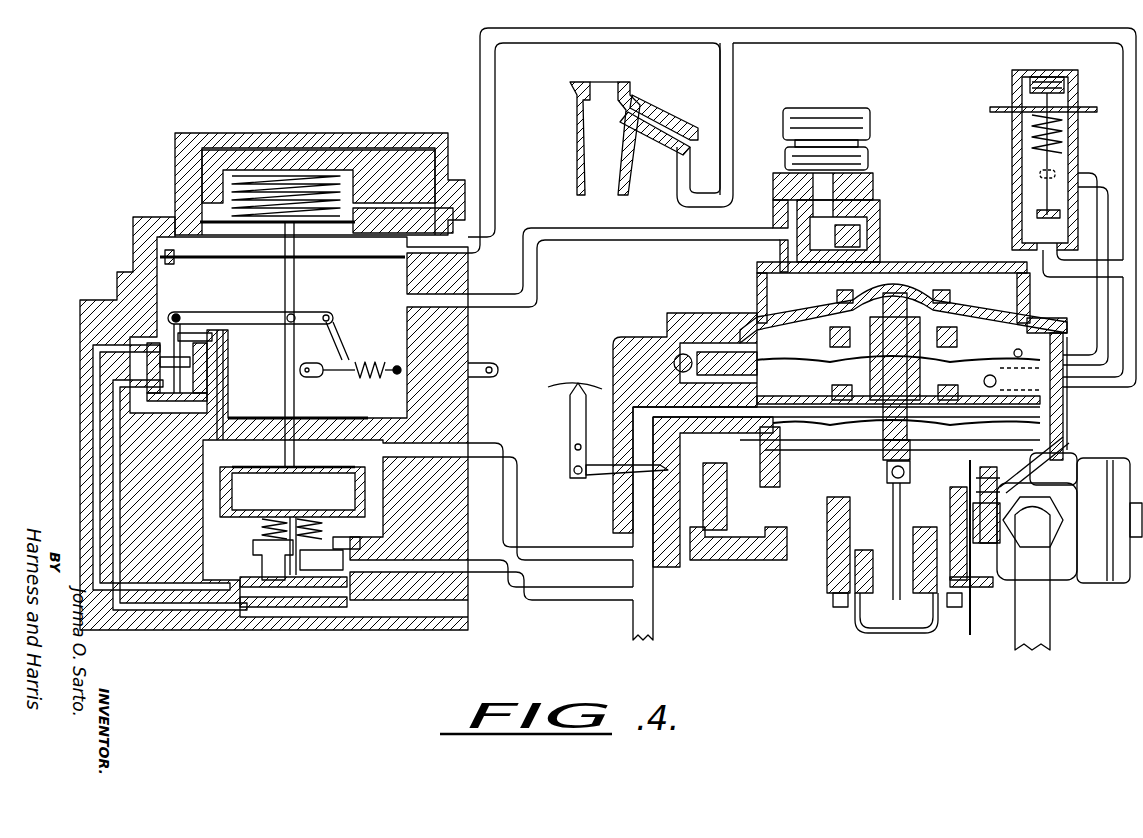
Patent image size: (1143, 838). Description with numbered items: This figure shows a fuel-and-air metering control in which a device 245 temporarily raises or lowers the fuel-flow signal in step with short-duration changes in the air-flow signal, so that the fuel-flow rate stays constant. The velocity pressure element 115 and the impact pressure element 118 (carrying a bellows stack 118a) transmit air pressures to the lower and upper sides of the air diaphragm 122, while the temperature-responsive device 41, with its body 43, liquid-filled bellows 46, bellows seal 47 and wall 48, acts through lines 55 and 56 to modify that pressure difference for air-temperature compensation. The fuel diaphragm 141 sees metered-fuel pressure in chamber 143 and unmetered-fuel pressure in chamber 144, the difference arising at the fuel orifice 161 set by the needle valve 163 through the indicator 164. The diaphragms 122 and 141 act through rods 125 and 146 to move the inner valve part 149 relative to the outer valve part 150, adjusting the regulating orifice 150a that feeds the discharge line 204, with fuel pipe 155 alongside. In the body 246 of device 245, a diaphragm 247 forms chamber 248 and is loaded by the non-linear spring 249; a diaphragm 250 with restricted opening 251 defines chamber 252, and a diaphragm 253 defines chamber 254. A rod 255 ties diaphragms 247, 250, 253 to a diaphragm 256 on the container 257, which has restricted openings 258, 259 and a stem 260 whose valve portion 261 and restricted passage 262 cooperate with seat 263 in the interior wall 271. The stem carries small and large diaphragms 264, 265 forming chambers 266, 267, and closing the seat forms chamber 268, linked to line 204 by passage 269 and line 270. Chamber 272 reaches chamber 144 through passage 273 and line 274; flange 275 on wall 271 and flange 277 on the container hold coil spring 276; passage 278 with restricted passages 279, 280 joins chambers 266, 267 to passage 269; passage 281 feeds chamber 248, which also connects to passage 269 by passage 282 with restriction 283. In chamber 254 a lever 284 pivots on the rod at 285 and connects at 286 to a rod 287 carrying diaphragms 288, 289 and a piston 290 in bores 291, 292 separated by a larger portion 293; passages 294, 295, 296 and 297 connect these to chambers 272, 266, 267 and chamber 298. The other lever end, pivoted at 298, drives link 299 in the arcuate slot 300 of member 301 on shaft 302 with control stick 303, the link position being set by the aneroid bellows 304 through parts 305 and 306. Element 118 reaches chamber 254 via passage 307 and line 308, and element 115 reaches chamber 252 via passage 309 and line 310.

The device 245 is at (245, 126).
The body 246 is at (318, 131).
The diaphragm 247 is at (309, 220).
The chamber 248 is at (262, 207).
The variable-rate spring 249 is at (276, 179).
The diaphragm 250 is at (323, 262).
The restricted opening 251 is at (170, 264).
The chamber 252 is at (310, 246).
The diaphragm 253 is at (300, 419).
The chamber 254 is at (350, 325).
The rod 255 is at (270, 373).
The diaphragm 256 is at (268, 467).
The container 257 is at (352, 467).
The restricted opening 258 is at (292, 492).
The restricted opening 259 is at (240, 494).
The stem part 260 is at (342, 576).
The valve portion 261 is at (252, 550).
The restricted passage 262 is at (254, 566).
The seat 263 is at (333, 547).
The small diaphragm 264 is at (316, 590).
The large diaphragm 265 is at (317, 607).
The chamber 266 is at (293, 586).
The chamber 267 is at (293, 605).
The chamber 268 is at (321, 560).
The passage 269 is at (480, 596).
The line 270 is at (580, 601).
The interior wall 271 is at (356, 553).
The chamber 272 is at (330, 458).
The passage 273 is at (475, 444).
The line 274 is at (552, 548).
The flange 275 is at (262, 528).
The coil spring 276 is at (322, 528).
The flange 277 is at (322, 516).
The passage 278 is at (390, 580).
The restricted passage 279 is at (351, 578).
The restricted passage 280 is at (352, 631).
The passage 281 is at (470, 337).
The passage 282 is at (440, 502).
The restriction 283 is at (440, 532).
The lever 284 is at (248, 312).
The pivot 285 is at (306, 315).
The pivotal connection 286 is at (186, 325).
The rod 287 is at (172, 321).
The diaphragm 288 is at (186, 320).
The diaphragm 289 is at (185, 408).
The piston 290 is at (226, 351).
The bore 291 is at (215, 373).
The bore 292 is at (212, 340).
The larger-diameter portion 293 is at (210, 362).
The passage 294 is at (209, 400).
The passage 295 is at (85, 487).
The passage 296 is at (82, 452).
The passage 297 is at (97, 362).
The chamber 298 is at (331, 320).
The link 299 is at (340, 346).
The arcuate slot 300 is at (335, 381).
The member 301 is at (394, 376).
The shaft 302 is at (309, 378).
The control stick 303 is at (497, 371).
The aneroid bellows 304 is at (373, 360).
The part 305 is at (361, 379).
The part 306 is at (379, 367).
The passage 307 is at (470, 300).
The line 308 is at (640, 241).
The passage 309 is at (470, 254).
The line 310 is at (496, 180).
The velocity pressure element 115 is at (560, 124).
The impact pressure element 118 is at (873, 216).
The bellows 118a is at (870, 137).
The temperature-responsive device 41 is at (992, 172).
The body 43 is at (1015, 212).
The bellows 46 is at (1068, 86).
The bellows seal 47 is at (1030, 121).
The wall 48 is at (990, 110).
The line 55 is at (1100, 180).
The line 56 is at (1065, 267).
The air diaphragm 122 is at (822, 363).
The rod 125 is at (925, 359).
The fuel diaphragm 141 is at (825, 438).
The metered-fuel chamber 143 is at (812, 399).
The unmetered-fuel chamber 144 is at (792, 483).
The rod 146 is at (905, 496).
The inner valve part 149 is at (888, 473).
The outer valve part 150 is at (855, 620).
The regulating orifice 150a is at (862, 472).
The fuel pipe 155 is at (1056, 616).
The fuel orifice 161 is at (675, 456).
The needle valve 163 is at (590, 479).
The indicator 164 is at (570, 430).
The discharge line 204 is at (660, 582).